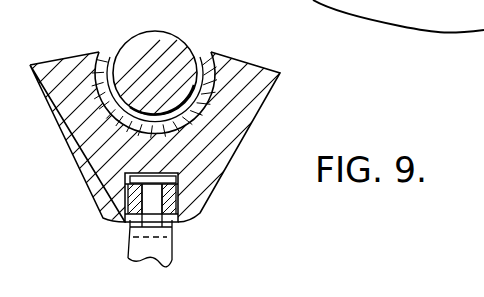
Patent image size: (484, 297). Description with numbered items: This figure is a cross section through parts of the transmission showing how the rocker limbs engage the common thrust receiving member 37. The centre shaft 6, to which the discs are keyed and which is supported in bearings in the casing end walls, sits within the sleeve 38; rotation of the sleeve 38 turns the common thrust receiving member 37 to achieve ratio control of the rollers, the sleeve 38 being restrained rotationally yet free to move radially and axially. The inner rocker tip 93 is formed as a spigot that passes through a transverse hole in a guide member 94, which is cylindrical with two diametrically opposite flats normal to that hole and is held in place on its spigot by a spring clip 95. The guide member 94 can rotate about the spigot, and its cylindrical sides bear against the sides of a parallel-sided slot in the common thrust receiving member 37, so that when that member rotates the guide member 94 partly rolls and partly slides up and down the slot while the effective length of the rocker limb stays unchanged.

The centre shaft 6 is at (177, 37).
The common thrust receiving member 37 is at (257, 108).
The sleeve 38 is at (207, 50).
The inner rocker tip 93 is at (150, 206).
The guide member 94 is at (128, 202).
The spring clip 95 is at (178, 181).